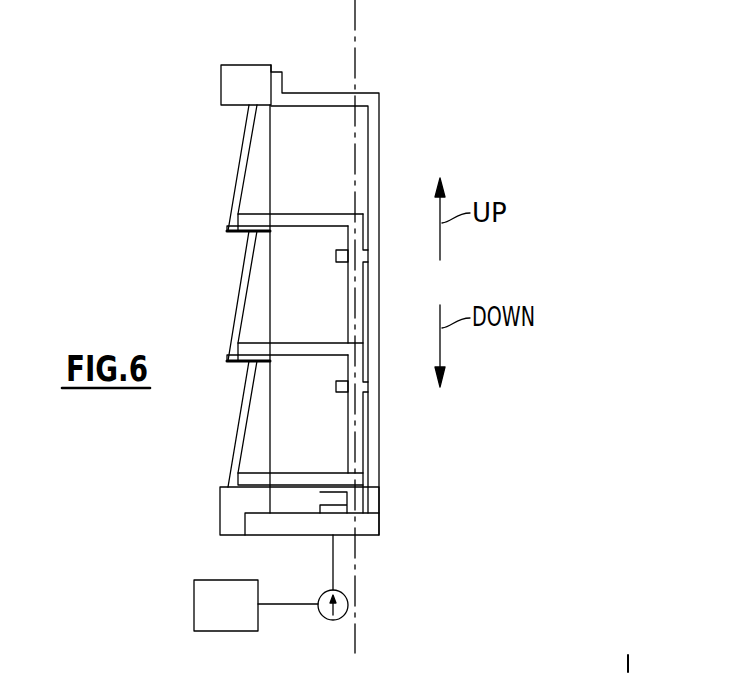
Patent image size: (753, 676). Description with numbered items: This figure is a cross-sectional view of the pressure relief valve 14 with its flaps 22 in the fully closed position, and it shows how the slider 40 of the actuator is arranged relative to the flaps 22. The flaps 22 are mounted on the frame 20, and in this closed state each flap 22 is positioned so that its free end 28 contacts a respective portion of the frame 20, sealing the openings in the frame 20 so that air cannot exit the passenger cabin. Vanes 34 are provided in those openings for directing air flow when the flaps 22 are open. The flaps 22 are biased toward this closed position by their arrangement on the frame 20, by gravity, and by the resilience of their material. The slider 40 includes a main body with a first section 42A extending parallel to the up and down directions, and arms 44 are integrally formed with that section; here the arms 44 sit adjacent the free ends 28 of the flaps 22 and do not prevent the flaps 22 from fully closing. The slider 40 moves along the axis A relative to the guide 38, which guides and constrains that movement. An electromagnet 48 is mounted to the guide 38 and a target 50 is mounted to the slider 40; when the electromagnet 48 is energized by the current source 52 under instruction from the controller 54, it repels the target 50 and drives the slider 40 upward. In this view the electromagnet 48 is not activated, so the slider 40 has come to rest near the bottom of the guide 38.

The pressure relief valve 14 is at (530, 71).
The frame 20 is at (232, 85).
The flaps 22 is at (240, 168).
The free ends 28 is at (228, 227).
The vanes 34 is at (262, 142).
The guide 38 is at (375, 132).
The slider 40 is at (335, 301).
The first section 42A is at (348, 423).
The arms 44 is at (296, 220).
The electromagnet 48 is at (346, 503).
The target 50 is at (318, 496).
The current source 52 is at (323, 622).
The controller 54 is at (241, 618).
The axis A is at (358, 588).